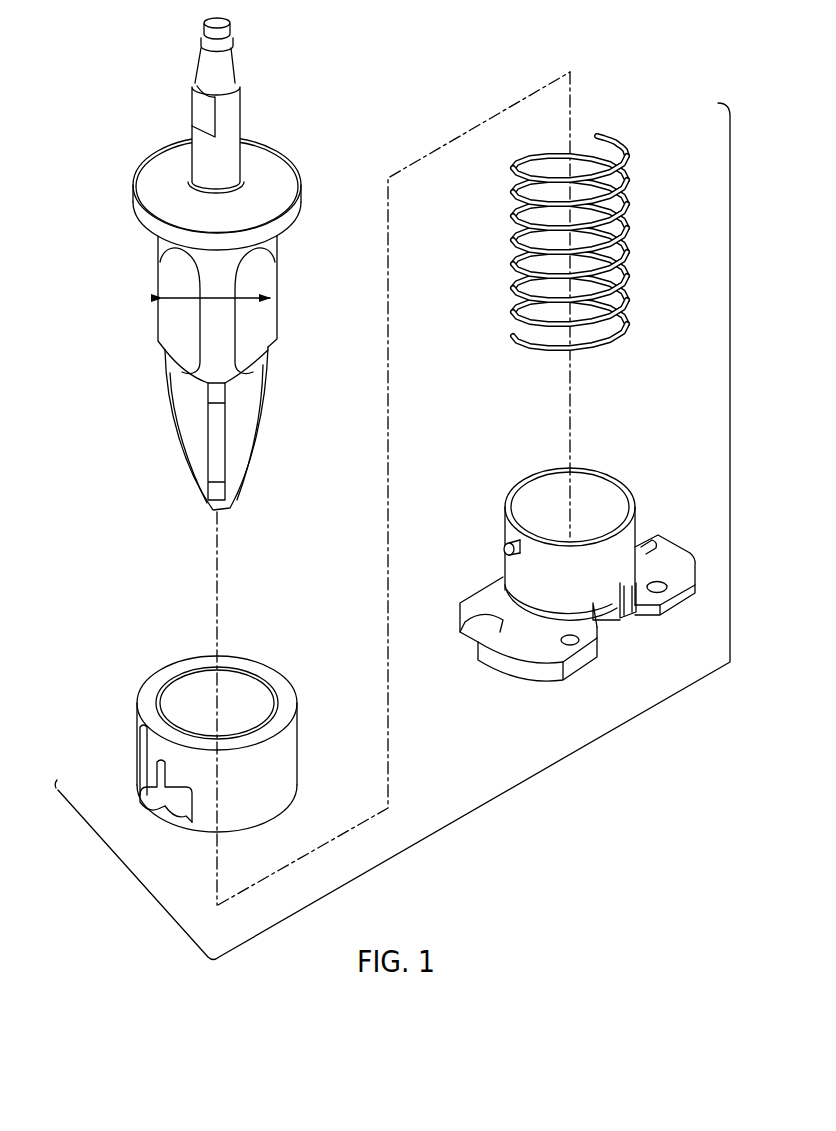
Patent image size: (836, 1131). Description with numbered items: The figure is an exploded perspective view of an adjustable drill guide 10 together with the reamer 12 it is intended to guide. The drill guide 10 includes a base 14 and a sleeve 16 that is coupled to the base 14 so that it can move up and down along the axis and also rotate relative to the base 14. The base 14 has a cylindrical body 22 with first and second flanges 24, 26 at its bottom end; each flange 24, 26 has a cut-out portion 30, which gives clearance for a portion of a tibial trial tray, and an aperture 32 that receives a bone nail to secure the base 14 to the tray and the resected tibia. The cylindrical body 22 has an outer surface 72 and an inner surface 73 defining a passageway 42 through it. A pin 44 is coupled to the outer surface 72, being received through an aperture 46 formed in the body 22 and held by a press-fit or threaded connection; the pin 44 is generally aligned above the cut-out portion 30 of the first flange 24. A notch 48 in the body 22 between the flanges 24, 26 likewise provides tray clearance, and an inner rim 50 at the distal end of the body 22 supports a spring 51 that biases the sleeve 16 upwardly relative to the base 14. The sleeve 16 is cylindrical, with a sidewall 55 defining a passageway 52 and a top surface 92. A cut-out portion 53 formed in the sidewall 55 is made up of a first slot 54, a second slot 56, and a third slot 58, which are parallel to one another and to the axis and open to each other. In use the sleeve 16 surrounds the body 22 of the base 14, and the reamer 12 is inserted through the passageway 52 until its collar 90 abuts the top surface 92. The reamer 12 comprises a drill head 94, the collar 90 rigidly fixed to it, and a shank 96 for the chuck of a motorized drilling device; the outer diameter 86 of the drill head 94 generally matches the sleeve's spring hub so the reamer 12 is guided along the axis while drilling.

The adjustable drill guide 10 is at (455, 818).
The reamer 12 is at (135, 288).
The base 14 is at (633, 472).
The sleeve 16 is at (257, 652).
The cylindrical body 22 is at (577, 529).
The first flange 24 is at (558, 604).
The second flange 26 is at (657, 604).
The cut-out portion 30 is at (480, 630).
The aperture 32 is at (558, 642).
The passageway 42 is at (569, 490).
The pin 44 is at (505, 547).
The aperture 46 is at (524, 552).
The notch 48 is at (605, 602).
The inner rim 50 is at (630, 610).
The spring 51 is at (643, 200).
The passageway 52 is at (193, 705).
The cut-out portion 53 is at (133, 762).
The first slot 54 is at (142, 796).
The sidewall 55 is at (293, 763).
The second slot 56 is at (162, 812).
The third slot 58 is at (184, 823).
The outer surface 72 is at (505, 573).
The inner surface 73 is at (588, 490).
The outer diameter 86 is at (182, 302).
The collar 90 is at (278, 158).
The top surface 92 is at (280, 686).
The drill head 94 is at (178, 342).
The shank 96 is at (253, 97).